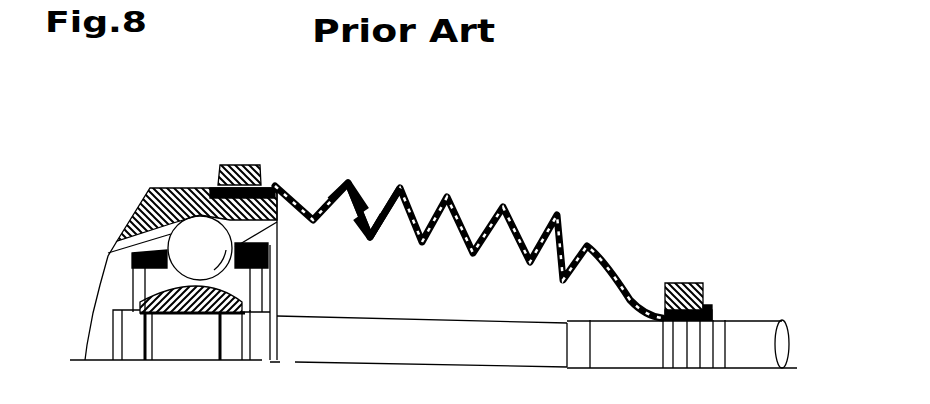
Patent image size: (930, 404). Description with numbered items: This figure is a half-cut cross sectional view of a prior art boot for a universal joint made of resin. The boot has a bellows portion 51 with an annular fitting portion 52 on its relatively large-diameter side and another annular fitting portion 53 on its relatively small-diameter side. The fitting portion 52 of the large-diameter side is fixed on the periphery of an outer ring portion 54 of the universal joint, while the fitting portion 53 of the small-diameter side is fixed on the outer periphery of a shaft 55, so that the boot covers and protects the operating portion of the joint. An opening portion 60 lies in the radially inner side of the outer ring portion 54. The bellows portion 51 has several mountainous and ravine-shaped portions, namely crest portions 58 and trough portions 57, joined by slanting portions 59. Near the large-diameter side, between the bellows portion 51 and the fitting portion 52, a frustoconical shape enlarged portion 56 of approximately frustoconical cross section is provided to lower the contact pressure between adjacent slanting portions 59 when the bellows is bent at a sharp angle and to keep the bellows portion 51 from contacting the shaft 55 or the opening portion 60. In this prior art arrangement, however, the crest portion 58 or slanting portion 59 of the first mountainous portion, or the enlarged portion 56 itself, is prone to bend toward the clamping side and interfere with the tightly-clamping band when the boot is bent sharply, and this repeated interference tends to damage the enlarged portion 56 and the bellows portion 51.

The bellows portion 51 is at (436, 184).
The annular fitting portion 52 is at (210, 172).
The annular fitting portion 53 is at (713, 293).
The outer ring portion 54 is at (143, 197).
The shaft 55 is at (760, 328).
The frustoconical shape enlarged portion 56 is at (272, 184).
The trough portion 57 is at (373, 233).
The crest portion 58 is at (350, 182).
The slanting portion 59 is at (378, 205).
The opening portion 60 is at (268, 245).